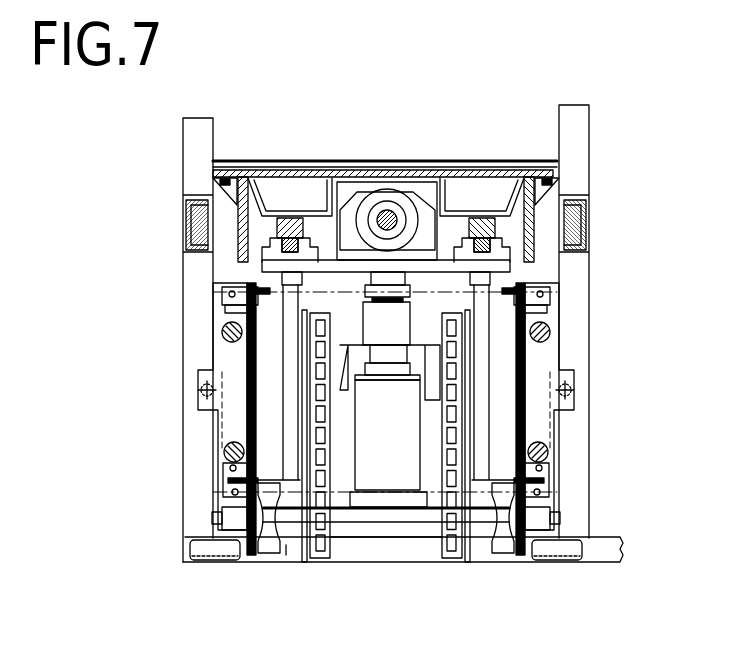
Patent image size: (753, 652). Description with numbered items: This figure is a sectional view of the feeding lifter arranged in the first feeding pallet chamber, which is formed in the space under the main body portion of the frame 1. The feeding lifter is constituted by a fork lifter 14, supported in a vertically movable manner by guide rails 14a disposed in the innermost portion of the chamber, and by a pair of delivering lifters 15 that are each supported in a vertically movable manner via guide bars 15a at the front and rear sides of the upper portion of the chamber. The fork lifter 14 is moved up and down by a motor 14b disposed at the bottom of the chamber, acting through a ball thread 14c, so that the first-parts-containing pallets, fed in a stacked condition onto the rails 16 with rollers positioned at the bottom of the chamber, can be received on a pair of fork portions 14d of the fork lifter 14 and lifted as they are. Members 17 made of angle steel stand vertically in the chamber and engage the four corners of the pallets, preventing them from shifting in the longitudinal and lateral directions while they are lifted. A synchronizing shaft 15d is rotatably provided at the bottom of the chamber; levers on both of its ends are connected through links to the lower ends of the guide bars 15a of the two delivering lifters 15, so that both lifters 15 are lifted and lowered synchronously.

The frame 1 is at (216, 566).
The fork lifter 14 is at (487, 289).
The guide rails 14a is at (483, 238).
The motor 14b is at (390, 480).
The ball thread 14c is at (387, 213).
The fork portions 14d is at (510, 485).
The delivering lifters 15 is at (576, 442).
The guide bars 15a is at (560, 452).
The synchronizing shaft 15d is at (362, 518).
The rails with rollers 16 is at (450, 560).
The members made of angle steel 17 is at (556, 492).